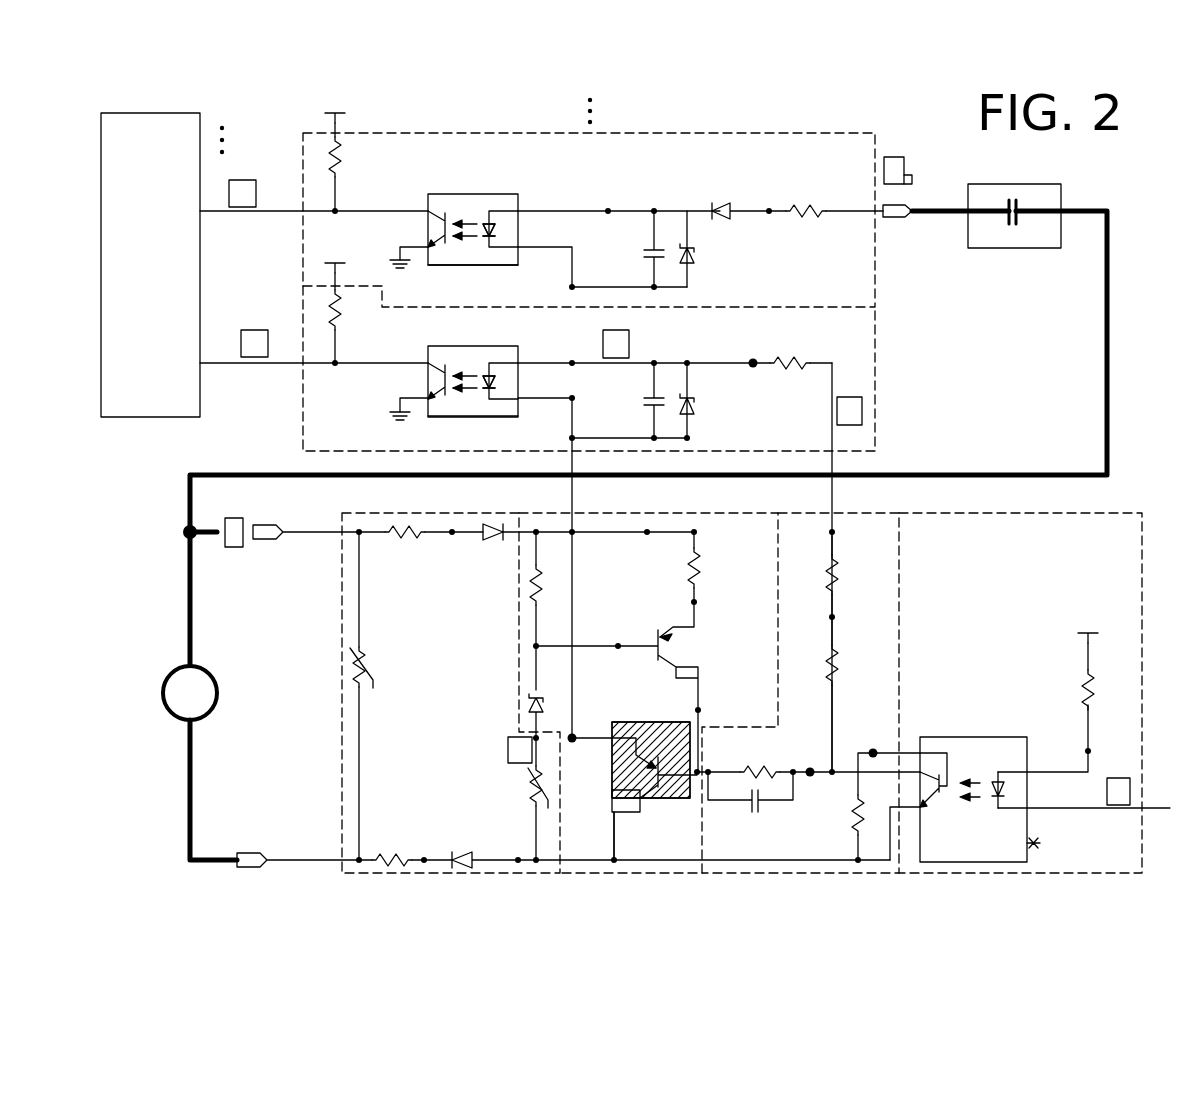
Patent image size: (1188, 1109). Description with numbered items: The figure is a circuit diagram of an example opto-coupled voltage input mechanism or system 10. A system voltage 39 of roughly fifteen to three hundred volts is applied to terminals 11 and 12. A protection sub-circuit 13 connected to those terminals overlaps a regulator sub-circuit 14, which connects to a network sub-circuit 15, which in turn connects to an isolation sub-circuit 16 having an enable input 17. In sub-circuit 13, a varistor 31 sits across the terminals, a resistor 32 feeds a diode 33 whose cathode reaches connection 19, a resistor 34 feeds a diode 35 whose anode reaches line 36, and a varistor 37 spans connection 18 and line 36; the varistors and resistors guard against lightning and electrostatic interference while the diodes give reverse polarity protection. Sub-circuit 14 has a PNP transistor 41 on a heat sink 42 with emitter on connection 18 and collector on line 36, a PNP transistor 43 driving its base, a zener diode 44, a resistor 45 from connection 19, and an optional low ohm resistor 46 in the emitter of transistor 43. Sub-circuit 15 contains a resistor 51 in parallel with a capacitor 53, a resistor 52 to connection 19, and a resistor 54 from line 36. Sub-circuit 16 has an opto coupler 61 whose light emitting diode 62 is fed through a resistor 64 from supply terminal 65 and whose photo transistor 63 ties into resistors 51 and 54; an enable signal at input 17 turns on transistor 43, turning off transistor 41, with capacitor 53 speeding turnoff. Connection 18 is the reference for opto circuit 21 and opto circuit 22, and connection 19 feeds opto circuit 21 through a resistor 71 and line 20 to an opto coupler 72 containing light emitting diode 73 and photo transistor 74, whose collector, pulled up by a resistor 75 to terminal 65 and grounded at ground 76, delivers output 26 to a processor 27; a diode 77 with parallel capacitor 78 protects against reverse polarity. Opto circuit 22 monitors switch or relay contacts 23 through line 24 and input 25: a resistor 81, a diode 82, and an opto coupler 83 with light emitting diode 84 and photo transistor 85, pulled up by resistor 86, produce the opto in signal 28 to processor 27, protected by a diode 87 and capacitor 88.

The opto-coupled voltage input mechanism or system 10 is at (1128, 384).
The line or terminal 11 is at (267, 541).
The line or terminal 12 is at (248, 853).
The protection sub-circuit 13 is at (452, 512).
The regulator sub-circuit 14 is at (649, 512).
The network sub-circuit 15 is at (852, 512).
The isolation sub-circuit 16 is at (1012, 512).
The input 17 is at (1168, 806).
The connection 18 is at (572, 248).
The connection 19 is at (834, 466).
The line 20 is at (665, 362).
The opto circuit 21 is at (875, 374).
The opto circuit 22 is at (875, 292).
The switch or relay contacts 23 is at (1012, 250).
The line 24 is at (1110, 290).
The input 25 is at (897, 218).
The output 26 is at (333, 365).
The processor 27 is at (200, 289).
The opto in signal 28 is at (282, 211).
The varistor 31 is at (352, 670).
The 100 ohm resistor 32 is at (412, 540).
The diode 33 is at (480, 538).
The 100 ohm resistor 34 is at (398, 858).
The diode 35 is at (456, 852).
The line 36 is at (599, 858).
The varistor 37 is at (530, 800).
The system voltage 39 is at (218, 693).
The PNP transistor 41 is at (646, 722).
The heat sink 42 is at (613, 764).
The PNP transistor 43 is at (666, 637).
The zener diode 44 is at (528, 700).
The 10K ohm resistor 45 is at (529, 599).
The low ohm resistor 46 is at (689, 575).
The 24K ohm resistor 51 is at (765, 770).
The resistor 52 is at (829, 580).
The 0.0022 microfarad capacitor 53 is at (760, 808).
The 20K ohm resistor 54 is at (852, 811).
The opto coupler 61 is at (1027, 745).
The light emitting diode 62 is at (992, 804).
The light sensitive photo NPN transistor 63 is at (940, 800).
The 100 ohm resistor 64 is at (1081, 690).
The plus 3.3 volt supply terminal 65 is at (323, 114).
The 12K ohm resistor 71 is at (786, 357).
The opto coupler 72 is at (510, 416).
The light emitting diode 73 is at (487, 413).
The light sensitive photo NPN transistor 74 is at (433, 364).
The 56K ohm resistor 75 is at (342, 338).
The ground 76 is at (394, 259).
The diode 77 is at (697, 405).
The 0.047 microfarad capacitor 78 is at (651, 400).
The 12K ohm resistor 81 is at (803, 206).
The diode 82 is at (733, 208).
The opto coupler 83 is at (510, 265).
The light emitting diode 84 is at (487, 262).
The light sensitive photo NPN transistor 85 is at (432, 210).
The 56K ohm resistor 86 is at (345, 186).
The diode 87 is at (697, 257).
The 0.047 microfarad capacitor 88 is at (651, 250).